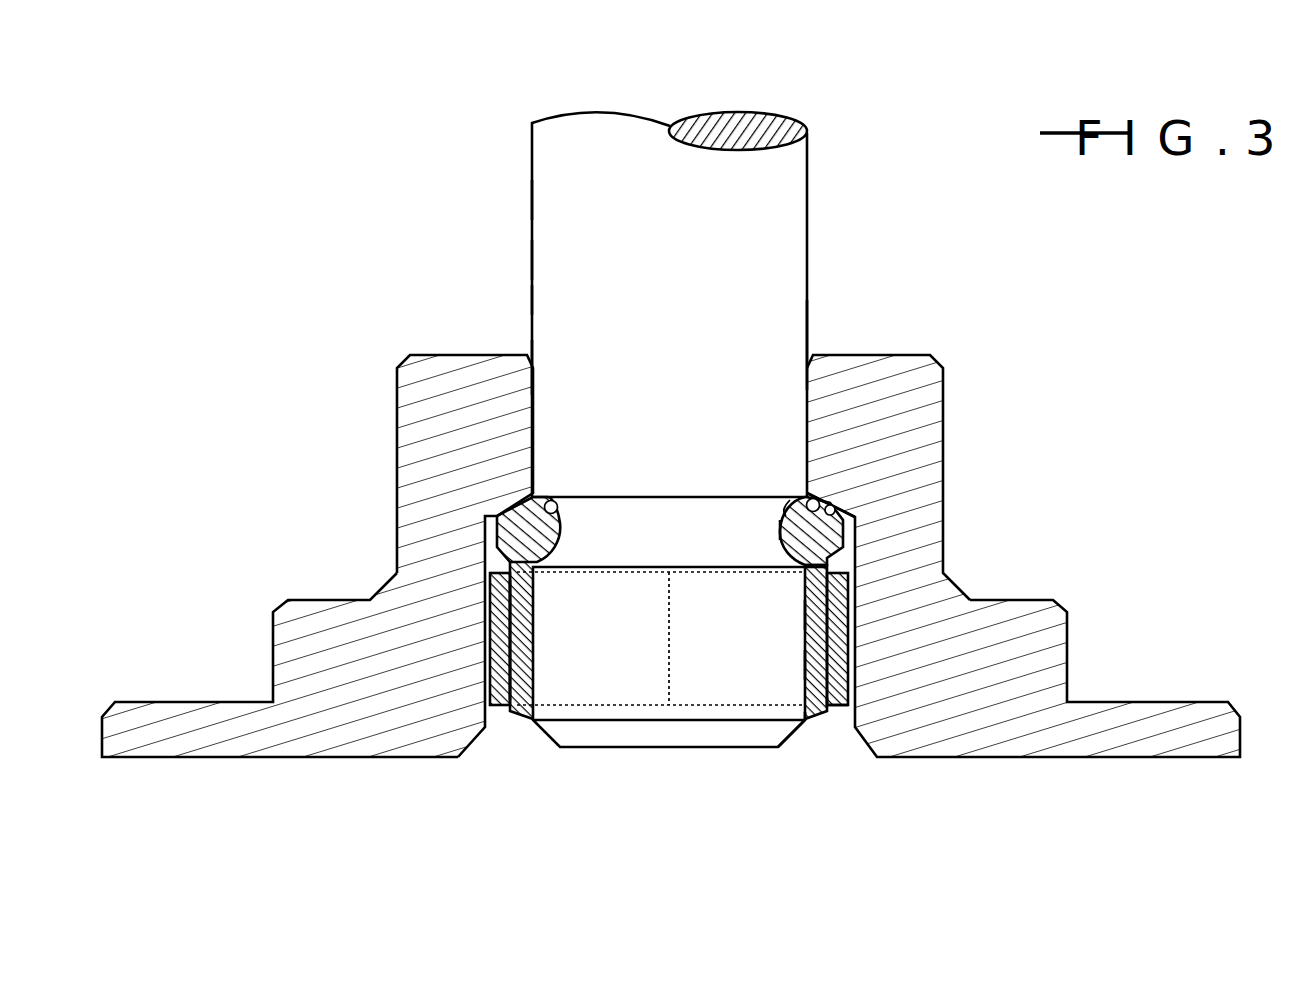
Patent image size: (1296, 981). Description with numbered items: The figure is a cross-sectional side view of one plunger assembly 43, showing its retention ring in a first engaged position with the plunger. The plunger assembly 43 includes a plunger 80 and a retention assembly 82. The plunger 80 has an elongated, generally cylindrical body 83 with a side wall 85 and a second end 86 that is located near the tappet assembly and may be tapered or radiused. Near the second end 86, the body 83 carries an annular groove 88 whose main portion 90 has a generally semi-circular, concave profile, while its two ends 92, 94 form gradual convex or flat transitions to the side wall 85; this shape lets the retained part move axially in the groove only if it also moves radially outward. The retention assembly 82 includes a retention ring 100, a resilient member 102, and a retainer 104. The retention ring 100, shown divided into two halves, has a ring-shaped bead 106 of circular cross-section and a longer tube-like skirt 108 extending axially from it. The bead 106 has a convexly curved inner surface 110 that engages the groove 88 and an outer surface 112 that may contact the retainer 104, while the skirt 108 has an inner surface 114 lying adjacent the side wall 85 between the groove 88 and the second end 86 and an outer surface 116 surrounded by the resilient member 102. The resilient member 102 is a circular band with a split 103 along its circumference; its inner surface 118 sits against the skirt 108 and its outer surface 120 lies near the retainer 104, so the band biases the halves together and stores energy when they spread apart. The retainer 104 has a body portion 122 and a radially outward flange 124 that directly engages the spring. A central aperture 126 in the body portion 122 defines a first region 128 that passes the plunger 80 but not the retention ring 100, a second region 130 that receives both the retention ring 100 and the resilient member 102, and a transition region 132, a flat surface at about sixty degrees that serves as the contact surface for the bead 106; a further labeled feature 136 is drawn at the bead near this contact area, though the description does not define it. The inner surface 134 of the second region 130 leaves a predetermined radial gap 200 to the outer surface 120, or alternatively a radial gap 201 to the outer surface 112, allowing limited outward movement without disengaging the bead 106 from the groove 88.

The plunger assembly 43 is at (482, 199).
The plunger 80 is at (615, 304).
The retention assembly 82 is at (671, 492).
The body 83 is at (532, 262).
The side wall 85 is at (532, 298).
The second end 86 is at (683, 680).
The annular groove 88 is at (772, 474).
The main portion 90 is at (501, 495).
The end 92 is at (524, 509).
The end 94 is at (497, 550).
The retention ring 100 is at (810, 719).
The resilient member 102 is at (838, 705).
The split 103 is at (668, 683).
The retainer 104 is at (945, 496).
The bead 106 is at (787, 507).
The skirt 108 is at (803, 617).
The inner surface 110 is at (780, 527).
The outer surface 112 is at (852, 534).
The inner surface 114 is at (803, 660).
The outer surface 116 is at (828, 620).
The inner surface 118 is at (827, 585).
The outer surface 120 is at (856, 590).
The body portion 122 is at (397, 425).
The flange 124 is at (195, 702).
The central aperture 126 is at (533, 393).
The first region 128 is at (807, 387).
The second region 130 is at (495, 700).
The transition region 132 is at (835, 506).
The inner surface 134 is at (483, 612).
The seal lip 136 is at (822, 498).
The radial gap 200 is at (848, 710).
The radial gap 201 is at (838, 502).